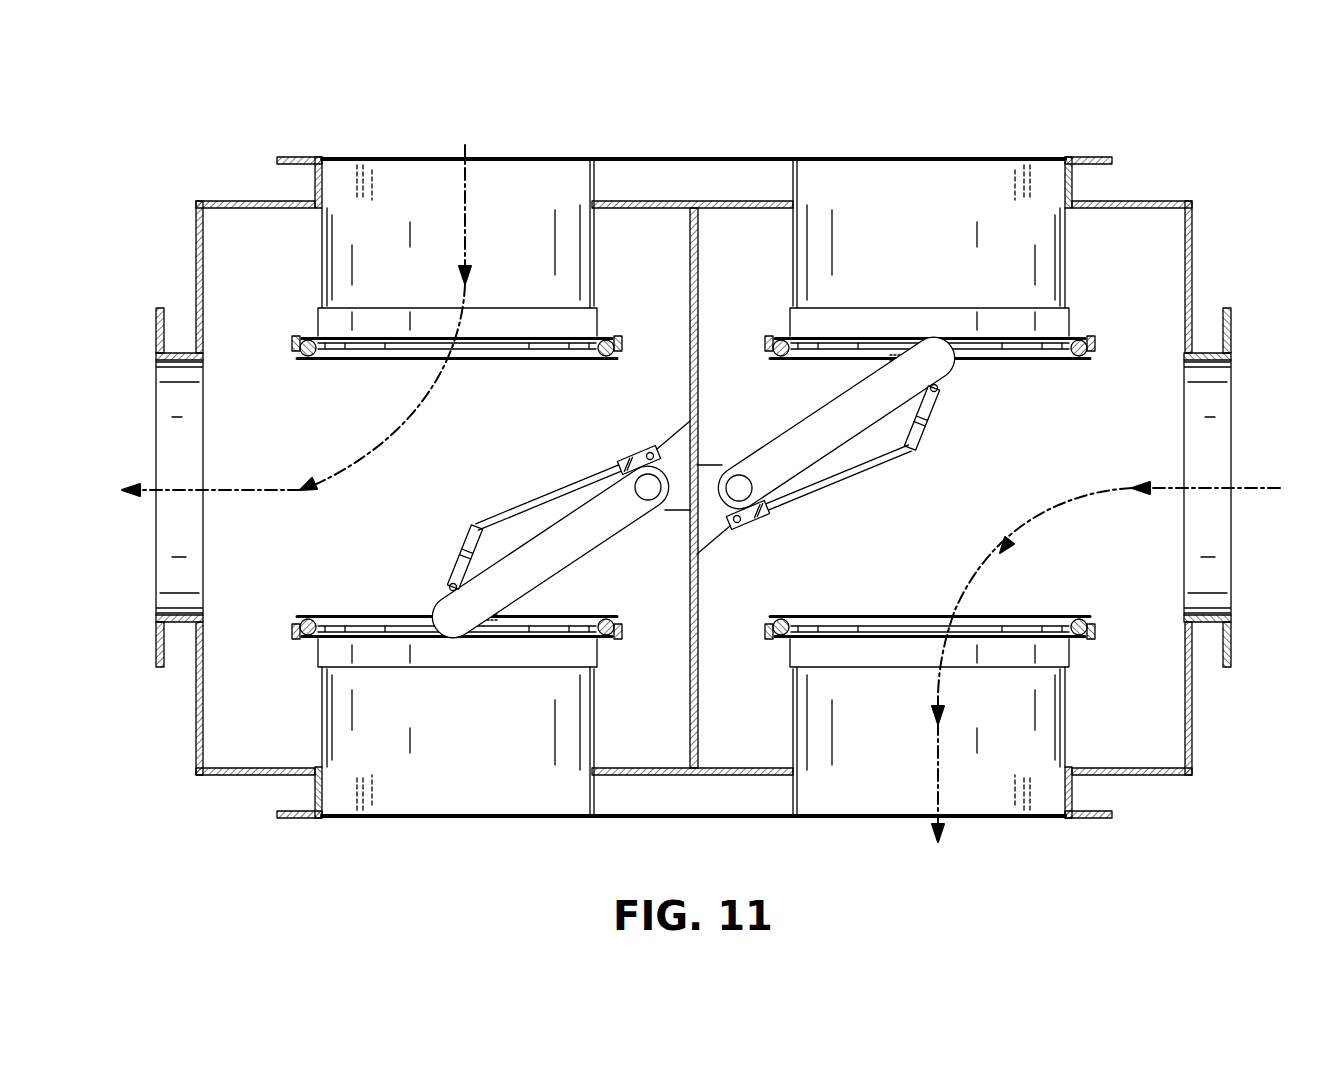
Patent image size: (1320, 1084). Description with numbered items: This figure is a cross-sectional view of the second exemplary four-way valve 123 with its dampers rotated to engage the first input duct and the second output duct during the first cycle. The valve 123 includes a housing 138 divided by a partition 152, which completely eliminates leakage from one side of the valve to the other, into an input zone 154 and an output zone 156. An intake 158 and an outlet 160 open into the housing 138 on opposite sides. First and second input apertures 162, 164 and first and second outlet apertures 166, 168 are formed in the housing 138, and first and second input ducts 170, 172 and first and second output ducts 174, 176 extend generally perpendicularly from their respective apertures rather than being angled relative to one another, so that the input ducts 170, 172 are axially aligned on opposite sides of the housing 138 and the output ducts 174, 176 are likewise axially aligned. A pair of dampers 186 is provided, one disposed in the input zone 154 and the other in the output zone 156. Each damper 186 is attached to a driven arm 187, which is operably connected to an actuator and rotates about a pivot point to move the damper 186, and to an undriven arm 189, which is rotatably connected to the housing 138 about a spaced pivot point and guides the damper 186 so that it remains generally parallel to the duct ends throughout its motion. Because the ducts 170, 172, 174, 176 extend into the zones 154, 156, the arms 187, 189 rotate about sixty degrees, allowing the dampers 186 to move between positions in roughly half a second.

The four-way valve 123 is at (1171, 146).
The housing 138 is at (1193, 234).
The partition 152 is at (703, 550).
The input zone 154 is at (1152, 299).
The output zone 156 is at (250, 268).
The intake 158 is at (1187, 541).
The outlet 160 is at (203, 541).
The first input aperture 162 is at (866, 206).
The second input aperture 164 is at (892, 766).
The first outlet aperture 166 is at (482, 206).
The second outlet aperture 168 is at (428, 776).
The first input duct 170 is at (790, 282).
The second input duct 172 is at (790, 725).
The first output duct 174 is at (593, 282).
The second output duct 176 is at (593, 725).
The damper 186 is at (375, 612).
The driven arm 187 is at (815, 430).
The undriven arm 189 is at (543, 493).